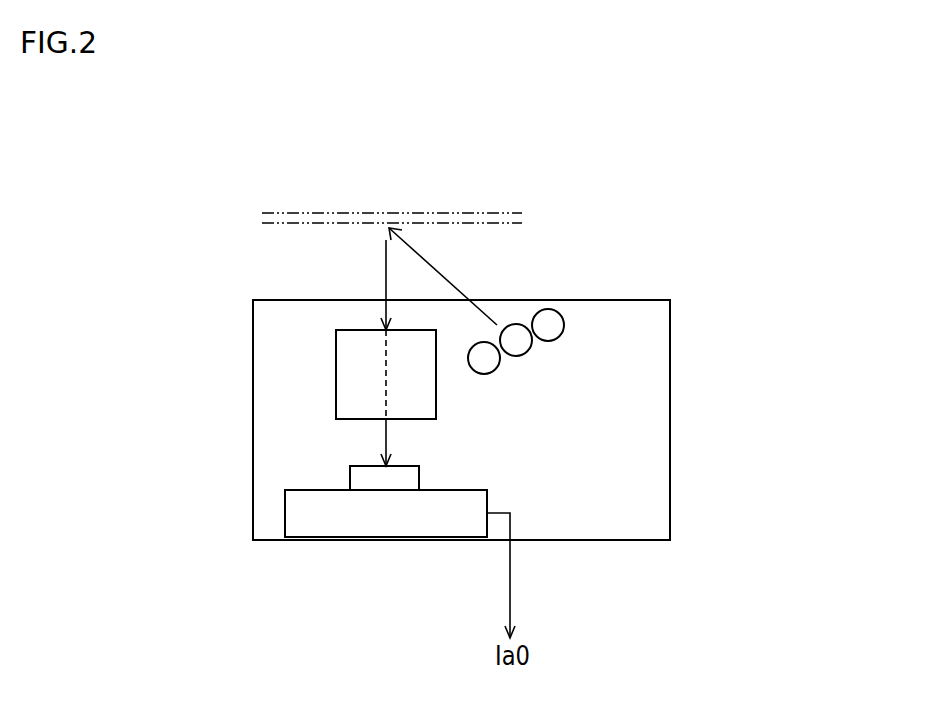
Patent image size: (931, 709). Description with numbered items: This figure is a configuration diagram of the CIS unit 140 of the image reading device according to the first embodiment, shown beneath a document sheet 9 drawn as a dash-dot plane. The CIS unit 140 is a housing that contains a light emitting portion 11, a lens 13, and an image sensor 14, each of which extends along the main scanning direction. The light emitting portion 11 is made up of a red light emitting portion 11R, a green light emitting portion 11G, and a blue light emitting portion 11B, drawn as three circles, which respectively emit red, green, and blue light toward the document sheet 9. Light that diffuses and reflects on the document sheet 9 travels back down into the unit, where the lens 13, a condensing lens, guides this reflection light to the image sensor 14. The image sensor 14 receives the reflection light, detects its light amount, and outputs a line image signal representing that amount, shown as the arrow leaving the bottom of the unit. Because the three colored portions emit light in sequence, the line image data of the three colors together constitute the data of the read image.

The document sheet 9 is at (410, 213).
The CIS unit 140 is at (670, 328).
The lens 13 is at (336, 403).
The image sensor 14 is at (487, 506).
The light emitting portion 11 is at (565, 386).
The red light emitting portion 11R is at (497, 372).
The green light emitting portion 11G is at (523, 356).
The blue light emitting portion 11B is at (587, 350).